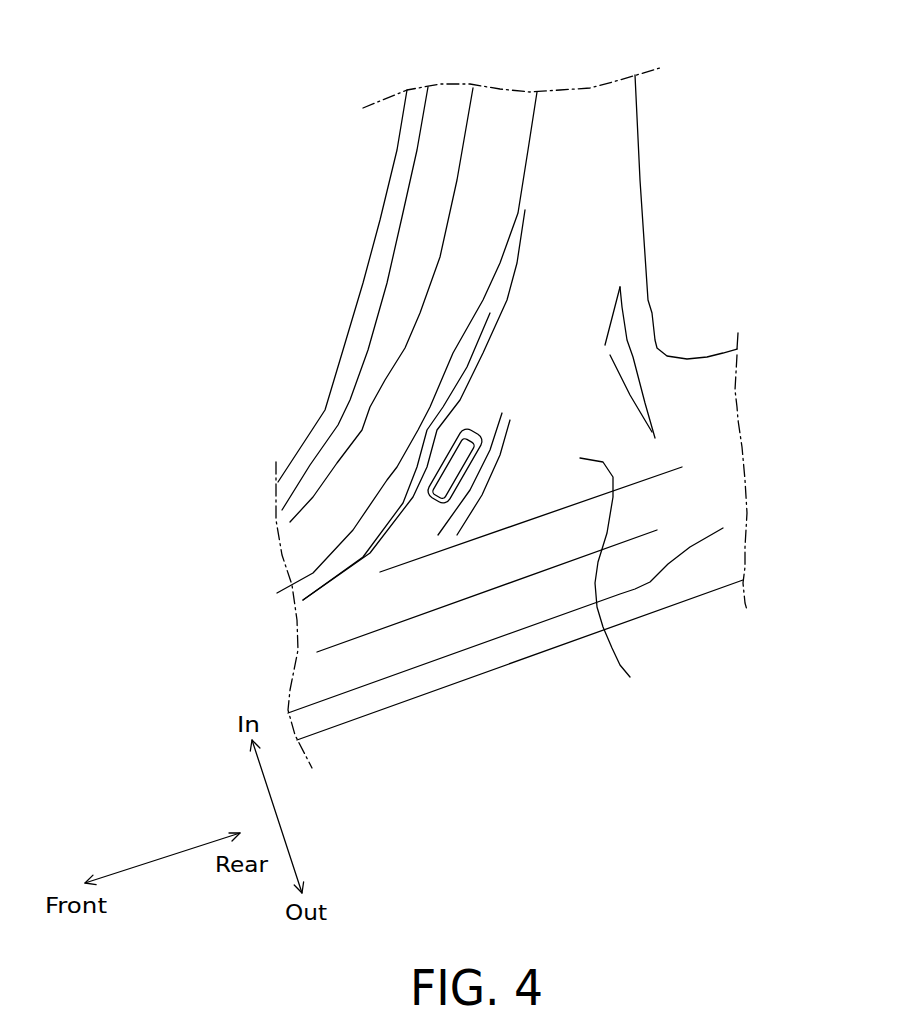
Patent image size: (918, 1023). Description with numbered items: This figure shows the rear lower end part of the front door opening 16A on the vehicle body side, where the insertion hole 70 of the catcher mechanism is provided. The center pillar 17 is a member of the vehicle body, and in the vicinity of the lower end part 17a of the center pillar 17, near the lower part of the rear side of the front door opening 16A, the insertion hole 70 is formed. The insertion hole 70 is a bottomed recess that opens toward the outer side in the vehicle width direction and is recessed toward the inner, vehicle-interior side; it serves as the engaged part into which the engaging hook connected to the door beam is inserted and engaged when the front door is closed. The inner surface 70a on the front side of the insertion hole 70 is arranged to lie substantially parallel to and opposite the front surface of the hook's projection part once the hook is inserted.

The front door opening 16A is at (371, 343).
The center pillar 17 is at (518, 407).
The lower end part of the center pillar 17a is at (621, 584).
The insertion hole 70 is at (481, 604).
The inner surface of the front side of the insertion hole 70a is at (344, 456).